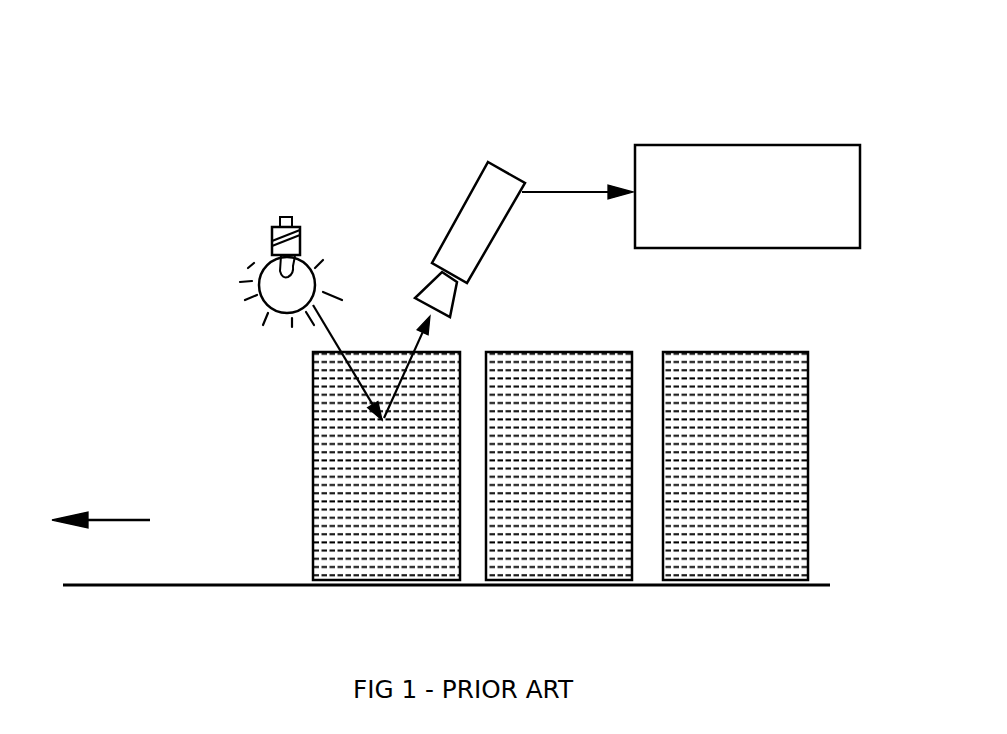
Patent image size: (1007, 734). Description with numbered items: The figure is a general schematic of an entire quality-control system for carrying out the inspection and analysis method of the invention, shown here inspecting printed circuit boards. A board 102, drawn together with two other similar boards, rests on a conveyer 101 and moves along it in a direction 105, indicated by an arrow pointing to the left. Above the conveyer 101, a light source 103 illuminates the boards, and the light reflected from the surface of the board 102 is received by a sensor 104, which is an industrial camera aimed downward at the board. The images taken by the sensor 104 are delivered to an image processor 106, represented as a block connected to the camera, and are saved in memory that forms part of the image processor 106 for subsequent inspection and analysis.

The conveyer 101 is at (180, 590).
The board 102 is at (412, 567).
The light source 103 is at (270, 240).
The sensor 104 is at (488, 253).
The direction 105 is at (101, 501).
The image processor 106 is at (808, 168).